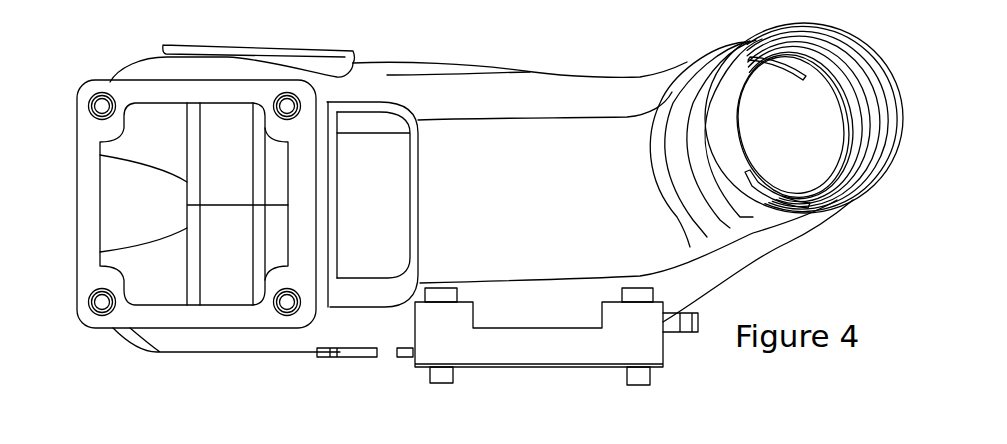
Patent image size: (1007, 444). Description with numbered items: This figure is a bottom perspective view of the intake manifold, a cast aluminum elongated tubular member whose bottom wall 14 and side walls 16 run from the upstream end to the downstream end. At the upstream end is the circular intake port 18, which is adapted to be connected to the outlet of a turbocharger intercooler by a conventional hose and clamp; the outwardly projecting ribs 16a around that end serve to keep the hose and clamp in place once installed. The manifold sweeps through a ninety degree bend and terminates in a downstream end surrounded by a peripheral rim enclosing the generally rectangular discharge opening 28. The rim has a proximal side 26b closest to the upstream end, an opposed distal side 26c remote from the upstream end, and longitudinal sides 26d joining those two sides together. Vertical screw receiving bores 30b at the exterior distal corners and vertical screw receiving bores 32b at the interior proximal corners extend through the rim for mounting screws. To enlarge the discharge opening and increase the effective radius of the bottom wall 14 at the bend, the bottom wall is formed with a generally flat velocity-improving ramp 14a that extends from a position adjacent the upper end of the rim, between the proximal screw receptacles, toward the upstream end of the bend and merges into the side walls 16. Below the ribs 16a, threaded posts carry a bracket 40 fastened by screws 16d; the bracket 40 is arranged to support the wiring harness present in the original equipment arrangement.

The bottom wall 14 is at (553, 195).
The ramp 14a is at (400, 157).
The side walls 16 is at (272, 45).
The outwardly projecting ribs 16a is at (813, 25).
The screws 16d is at (628, 385).
The circular intake port 18 is at (900, 95).
The proximal side 26b is at (313, 226).
The distal side 26c is at (77, 226).
The longitudinal sides 26d is at (213, 82).
The discharge opening 28 is at (145, 218).
The screw receiving bores 30b is at (102, 106).
The screw receiving bores 32b is at (288, 106).
The bracket 40 is at (556, 360).